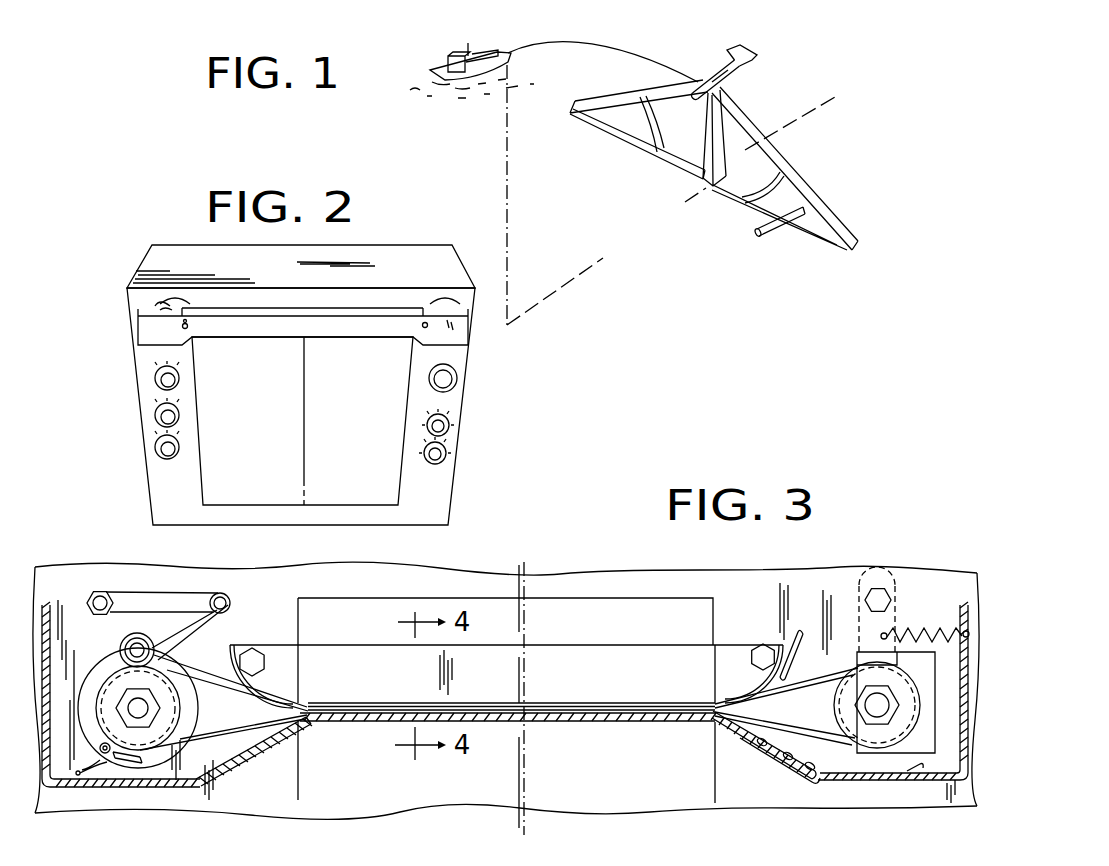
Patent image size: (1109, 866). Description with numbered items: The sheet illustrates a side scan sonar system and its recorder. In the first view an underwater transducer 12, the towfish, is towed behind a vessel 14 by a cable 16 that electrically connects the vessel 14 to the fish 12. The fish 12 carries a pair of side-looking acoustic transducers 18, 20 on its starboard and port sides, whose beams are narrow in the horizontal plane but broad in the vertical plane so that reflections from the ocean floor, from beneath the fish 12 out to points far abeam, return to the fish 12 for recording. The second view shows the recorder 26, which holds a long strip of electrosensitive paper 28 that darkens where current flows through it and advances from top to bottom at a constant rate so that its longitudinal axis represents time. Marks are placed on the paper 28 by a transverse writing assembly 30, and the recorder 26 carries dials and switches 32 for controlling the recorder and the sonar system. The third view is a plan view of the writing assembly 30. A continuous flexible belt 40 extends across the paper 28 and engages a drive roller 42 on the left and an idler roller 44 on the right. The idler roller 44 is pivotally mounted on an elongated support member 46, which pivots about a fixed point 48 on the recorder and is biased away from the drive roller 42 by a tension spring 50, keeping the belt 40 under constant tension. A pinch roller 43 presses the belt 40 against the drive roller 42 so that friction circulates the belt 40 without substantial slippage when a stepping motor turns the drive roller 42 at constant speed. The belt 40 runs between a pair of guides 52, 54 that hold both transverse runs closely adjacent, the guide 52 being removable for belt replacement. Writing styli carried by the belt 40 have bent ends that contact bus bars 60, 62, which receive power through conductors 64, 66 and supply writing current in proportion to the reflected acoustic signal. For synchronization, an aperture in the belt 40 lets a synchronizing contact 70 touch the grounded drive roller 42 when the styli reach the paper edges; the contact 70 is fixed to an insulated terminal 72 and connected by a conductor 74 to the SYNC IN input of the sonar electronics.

In FIG. 1, the underwater transducer 12 is at (766, 43).
In FIG. 1, the vessel 14 is at (444, 66).
In FIG. 1, the cable 16 is at (607, 44).
In FIG. 1, the starboard side acoustic transducer 18 is at (697, 88).
In FIG. 1, the port side acoustic transducer 20 is at (718, 84).
In FIG. 2, the recorder 26 is at (466, 477).
In FIG. 2, the electrosensitive paper 28 is at (346, 470).
In FIG. 2, the transverse writing assembly 30 is at (475, 337).
In FIG. 2, the dials and switches 32 is at (156, 443).
In FIG. 3, the belt 40 is at (212, 688).
In FIG. 3, the drive roller 42 is at (107, 688).
In FIG. 3, the pinch roller 43 is at (125, 637).
In FIG. 3, the idler roller 44 is at (848, 712).
In FIG. 3, the elongated support member 46 is at (857, 612).
In FIG. 3, the pivot point 48 is at (878, 592).
In FIG. 3, the tension spring 50 is at (924, 630).
In FIG. 3, the guide 52 is at (347, 662).
In FIG. 3, the guide 54 is at (334, 722).
In FIG. 3, the bus bar 60 is at (763, 685).
In FIG. 3, the bus bar 62 is at (762, 742).
In FIG. 3, the conductor 64 is at (798, 638).
In FIG. 3, the conductor 66 is at (800, 774).
In FIG. 3, the synchronizing contact 70 is at (133, 760).
In FIG. 3, the insulated terminal 72 is at (108, 753).
In FIG. 3, the conductor 74 is at (98, 763).